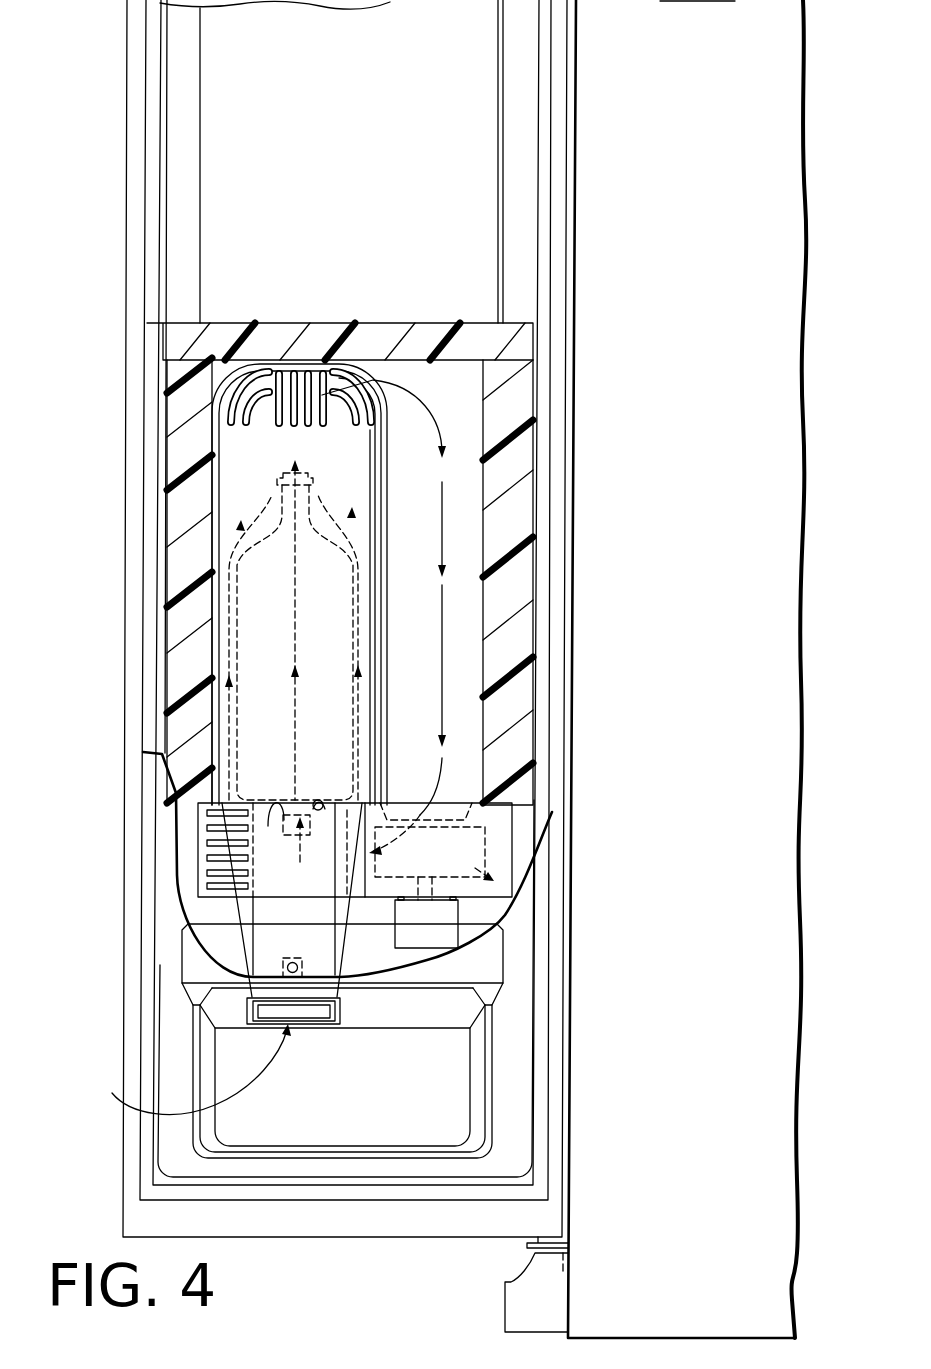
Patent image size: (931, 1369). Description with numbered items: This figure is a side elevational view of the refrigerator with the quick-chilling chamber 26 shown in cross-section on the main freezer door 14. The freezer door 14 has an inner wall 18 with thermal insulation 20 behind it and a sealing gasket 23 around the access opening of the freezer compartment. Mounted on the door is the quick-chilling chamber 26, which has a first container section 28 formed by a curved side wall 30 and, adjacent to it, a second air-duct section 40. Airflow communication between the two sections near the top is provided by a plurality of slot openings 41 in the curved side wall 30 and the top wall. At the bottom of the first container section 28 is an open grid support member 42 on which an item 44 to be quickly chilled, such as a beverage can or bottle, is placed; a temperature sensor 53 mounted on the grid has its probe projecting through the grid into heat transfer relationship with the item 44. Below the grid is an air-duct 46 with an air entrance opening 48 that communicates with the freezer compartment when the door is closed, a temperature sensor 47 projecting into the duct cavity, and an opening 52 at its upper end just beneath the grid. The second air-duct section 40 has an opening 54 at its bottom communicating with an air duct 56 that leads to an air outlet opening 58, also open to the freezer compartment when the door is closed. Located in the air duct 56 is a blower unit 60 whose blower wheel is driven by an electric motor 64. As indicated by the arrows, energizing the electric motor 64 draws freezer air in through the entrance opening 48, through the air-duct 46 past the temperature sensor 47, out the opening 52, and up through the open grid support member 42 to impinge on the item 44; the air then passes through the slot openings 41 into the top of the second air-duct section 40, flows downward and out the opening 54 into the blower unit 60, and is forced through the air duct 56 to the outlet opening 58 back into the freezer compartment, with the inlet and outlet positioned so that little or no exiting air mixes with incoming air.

The main freezer door 14 is at (122, 293).
The inner wall 18 is at (394, 1100).
The thermal insulation 20 is at (170, 562).
The sealing gasket 23 is at (148, 1023).
The quick-chilling chamber 26 is at (152, 641).
The first container section 28 is at (266, 469).
The curved side wall 30 is at (377, 582).
The second air-duct section 40 is at (429, 492).
The slot openings 41 is at (312, 427).
The open grid support member 42 is at (272, 826).
The item to be chilled 44 is at (353, 633).
The air-duct 46 is at (325, 952).
The temperature sensor 47 is at (302, 957).
The air entrance opening 48 is at (310, 1022).
The opening 52 is at (324, 806).
The temperature sensor 53 is at (302, 852).
The opening 54 is at (417, 813).
The air duct 56 is at (502, 847).
The air outlet opening 58 is at (206, 838).
The blower unit 60 is at (513, 893).
The electric motor 64 is at (442, 935).